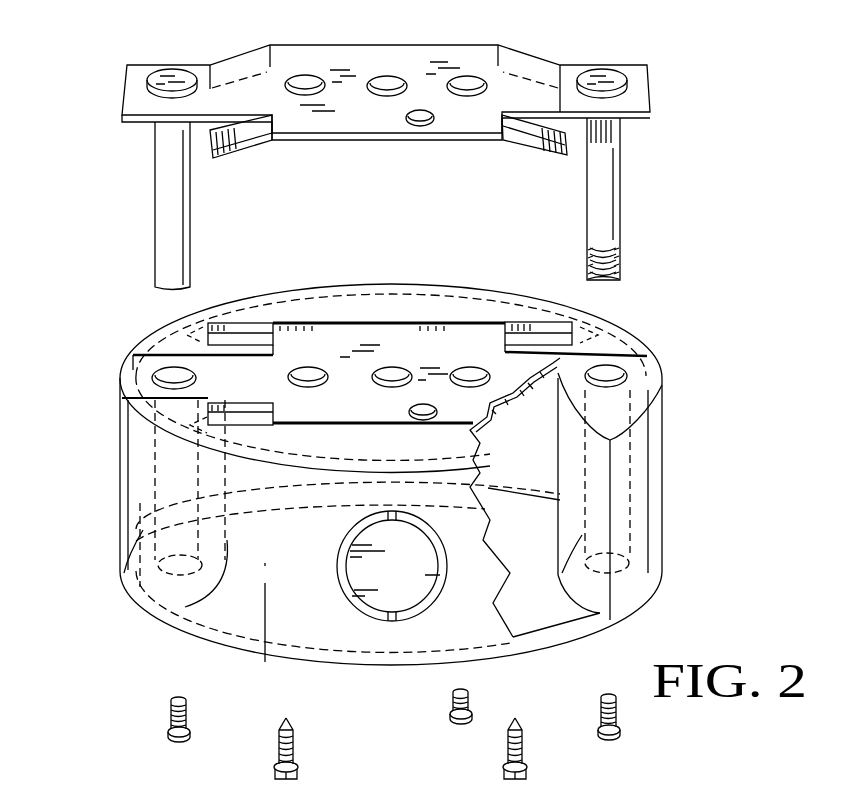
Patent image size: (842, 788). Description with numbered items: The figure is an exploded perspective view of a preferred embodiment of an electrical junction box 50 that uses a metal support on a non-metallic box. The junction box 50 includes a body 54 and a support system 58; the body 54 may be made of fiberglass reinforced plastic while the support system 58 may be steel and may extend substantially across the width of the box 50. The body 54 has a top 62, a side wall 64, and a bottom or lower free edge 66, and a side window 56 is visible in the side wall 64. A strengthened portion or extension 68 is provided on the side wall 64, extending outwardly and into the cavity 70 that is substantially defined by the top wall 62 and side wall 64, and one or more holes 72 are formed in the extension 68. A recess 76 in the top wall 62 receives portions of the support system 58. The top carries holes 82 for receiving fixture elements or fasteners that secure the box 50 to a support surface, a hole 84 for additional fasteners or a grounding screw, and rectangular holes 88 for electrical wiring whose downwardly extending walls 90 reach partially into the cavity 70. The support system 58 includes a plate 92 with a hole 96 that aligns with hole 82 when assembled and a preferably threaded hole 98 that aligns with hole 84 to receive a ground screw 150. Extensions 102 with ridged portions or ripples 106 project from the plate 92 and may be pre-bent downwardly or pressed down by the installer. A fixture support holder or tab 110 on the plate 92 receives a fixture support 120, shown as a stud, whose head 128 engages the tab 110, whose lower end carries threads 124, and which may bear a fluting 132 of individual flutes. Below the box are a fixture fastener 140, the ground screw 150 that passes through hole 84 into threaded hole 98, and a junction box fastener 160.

The junction box 50 is at (138, 318).
The body 54 is at (120, 500).
The side window opening 56 is at (392, 566).
The support system 58 is at (196, 60).
The top 62 is at (286, 300).
The side wall 64 is at (225, 612).
The bottom or lower free edge 66 is at (265, 662).
The strengthened portion or extension 68 is at (582, 578).
The cavity 70 is at (497, 515).
The hole 72 is at (628, 372).
The recess 76 is at (340, 335).
The hole 82 is at (400, 374).
The hole 84 is at (412, 411).
The hole 88 is at (508, 332).
The downwardly extending wall 90 is at (542, 325).
The plate 92 is at (447, 60).
The hole 96 is at (387, 84).
The hole 98 is at (431, 120).
The extension 102 is at (537, 150).
The ridged portion or ripple 106 is at (557, 158).
The fixture support holder or tab 110 is at (568, 72).
The fixture support 120 is at (611, 208).
The threaded portion or threads 124 is at (603, 280).
The head 128 is at (610, 72).
The fluting 132 is at (612, 134).
The fixture fastener 140 is at (597, 722).
The ground screw 150 is at (450, 710).
The junction box fastener 160 is at (507, 748).